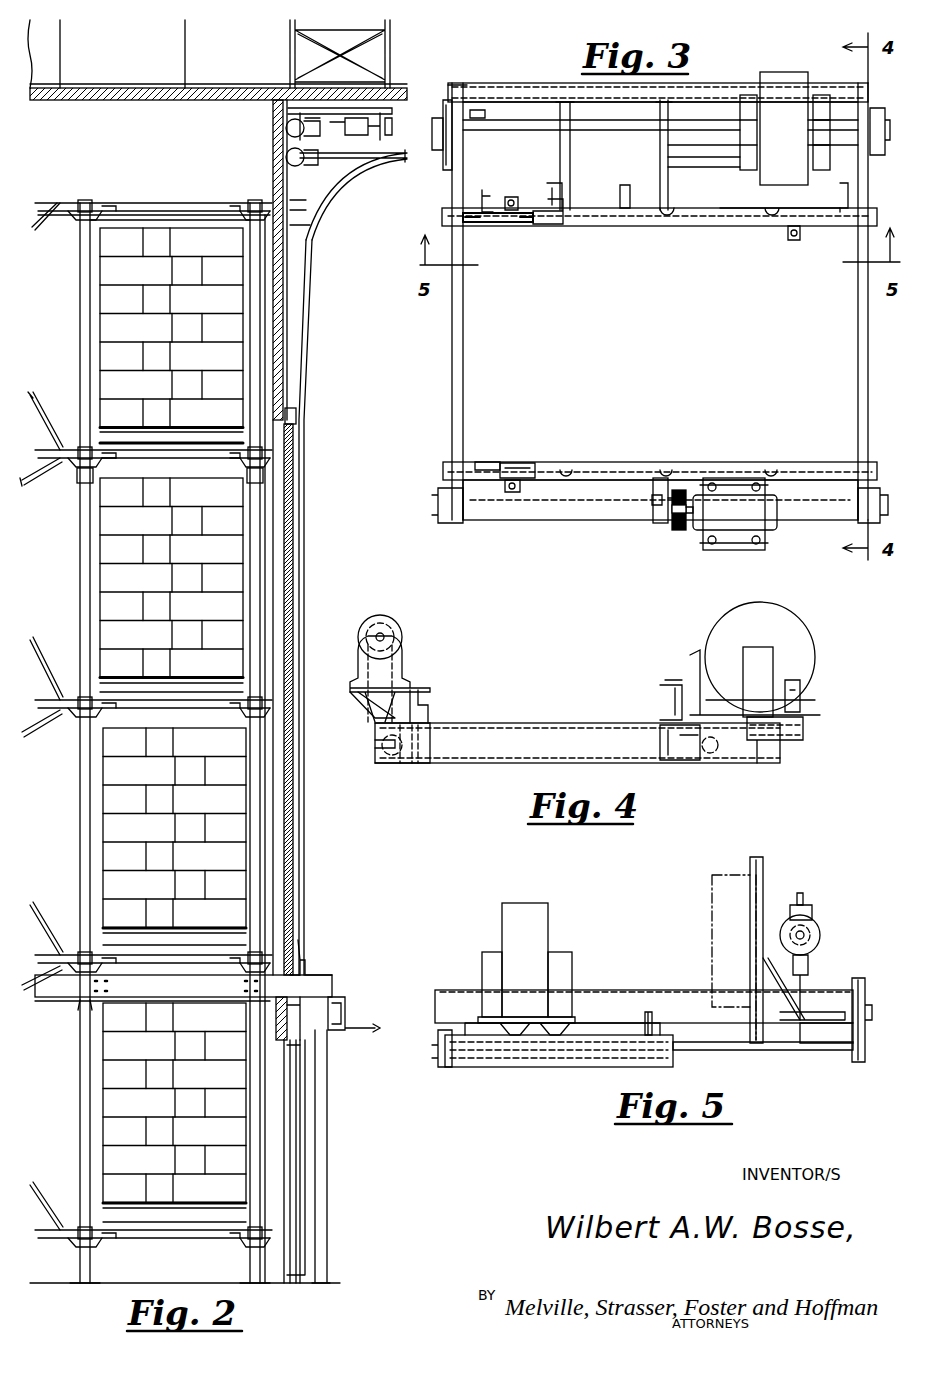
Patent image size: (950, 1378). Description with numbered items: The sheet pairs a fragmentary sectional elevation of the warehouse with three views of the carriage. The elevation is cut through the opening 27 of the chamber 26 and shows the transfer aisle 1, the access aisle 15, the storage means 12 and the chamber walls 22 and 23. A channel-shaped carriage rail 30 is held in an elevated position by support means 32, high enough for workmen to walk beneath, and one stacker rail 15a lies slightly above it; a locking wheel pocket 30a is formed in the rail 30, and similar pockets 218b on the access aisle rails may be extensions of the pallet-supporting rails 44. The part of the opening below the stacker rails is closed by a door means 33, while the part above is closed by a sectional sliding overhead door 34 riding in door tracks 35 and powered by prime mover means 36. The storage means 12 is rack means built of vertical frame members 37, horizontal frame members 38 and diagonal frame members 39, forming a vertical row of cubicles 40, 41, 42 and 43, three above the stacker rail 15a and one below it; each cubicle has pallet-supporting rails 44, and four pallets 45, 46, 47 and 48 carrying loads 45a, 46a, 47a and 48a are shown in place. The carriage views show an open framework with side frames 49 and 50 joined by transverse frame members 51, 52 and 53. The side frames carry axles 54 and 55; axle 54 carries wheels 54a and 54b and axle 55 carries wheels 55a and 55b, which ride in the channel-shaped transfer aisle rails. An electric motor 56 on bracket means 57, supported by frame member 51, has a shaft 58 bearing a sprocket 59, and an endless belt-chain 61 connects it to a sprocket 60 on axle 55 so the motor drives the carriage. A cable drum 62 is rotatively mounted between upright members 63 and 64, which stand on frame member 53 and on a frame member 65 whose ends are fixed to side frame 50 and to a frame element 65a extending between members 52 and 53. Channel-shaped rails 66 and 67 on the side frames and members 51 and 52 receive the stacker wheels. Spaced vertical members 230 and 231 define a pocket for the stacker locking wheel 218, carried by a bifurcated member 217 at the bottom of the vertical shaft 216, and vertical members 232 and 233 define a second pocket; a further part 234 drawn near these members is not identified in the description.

In FIG. 2, the transfer aisle 1 is at (340, 1283).
In FIG. 2, the storage means 12 is at (80, 828).
In FIG. 2, the access aisle 15 is at (128, 1283).
In FIG. 2, the stacker rail 15a is at (188, 995).
In FIG. 2, the wall 22 is at (284, 292).
In FIG. 2, the wall 23 is at (172, 152).
In FIG. 2, the chamber 26 is at (68, 1128).
In FIG. 2, the opening 27 is at (306, 1152).
In FIG. 2, the carriage rail 30 is at (345, 1008).
In FIG. 2, the locking wheel pocket 30a is at (327, 976).
In FIG. 2, the support means 32 is at (330, 1090).
In FIG. 2, the door means 33 is at (292, 1112).
In FIG. 2, the overhead door 34 is at (294, 495).
In FIG. 2, the door tracks 35 is at (305, 522).
In FIG. 2, the prime mover means 36 is at (335, 168).
In FIG. 2, the vertical frame members 37 is at (80, 541).
In FIG. 2, the horizontal frame members 38 is at (172, 212).
In FIG. 2, the diagonal frame members 39 is at (42, 408).
In FIG. 2, the storage cubicle 40 is at (92, 356).
In FIG. 2, the storage cubicle 41 is at (92, 603).
In FIG. 2, the storage cubicle 42 is at (93, 792).
In FIG. 2, the storage cubicle 43 is at (93, 1098).
In FIG. 2, the pallet-supporting rails 44 is at (104, 460).
In FIG. 2, the pallet 45 is at (170, 436).
In FIG. 2, the load 45a is at (158, 338).
In FIG. 2, the pallet 46 is at (170, 688).
In FIG. 2, the load 46a is at (156, 589).
In FIG. 2, the pallet 47 is at (172, 938).
In FIG. 2, the load 47a is at (156, 839).
In FIG. 2, the pallet 48 is at (180, 1210).
In FIG. 2, the load 48a is at (224, 1140).
In FIG. 3, the side frame 49 is at (464, 340).
In FIG. 5, the side frame 49 is at (866, 1058).
In FIG. 3, the side frame 50 is at (858, 344).
In FIG. 4, the side frame 50 is at (490, 732).
In FIG. 5, the side frame 50 is at (440, 1066).
In FIG. 4, the transverse frame member 51 is at (420, 765).
In FIG. 4, the transverse frame member 52 is at (680, 763).
In FIG. 3, the transverse frame member 53 is at (498, 90).
In FIG. 4, the transverse frame member 53 is at (805, 734).
In FIG. 5, the transverse frame member 53 is at (572, 1068).
In FIG. 3, the axle 54 is at (575, 128).
In FIG. 5, the axle 54 is at (790, 1052).
In FIG. 3, the wheel 54a is at (443, 148).
In FIG. 3, the wheel 54b is at (876, 140).
In FIG. 3, the axle 55 is at (540, 512).
In FIG. 4, the axle 55 is at (375, 750).
In FIG. 3, the wheel 55a is at (442, 520).
In FIG. 3, the wheel 55b is at (876, 490).
In FIG. 3, the electric motor 56 is at (765, 525).
In FIG. 4, the electric motor 56 is at (402, 660).
In FIG. 4, the bracket means 57 is at (430, 708).
In FIG. 3, the motor shaft 58 is at (672, 520).
In FIG. 4, the motor shaft 58 is at (400, 630).
In FIG. 3, the sprocket 59 is at (678, 528).
In FIG. 4, the sprocket 59 is at (392, 617).
In FIG. 3, the sprocket 60 is at (665, 495).
In FIG. 4, the sprocket 60 is at (385, 763).
In FIG. 3, the endless belt-chain 61 is at (655, 510).
In FIG. 4, the endless belt-chain 61 is at (372, 714).
In FIG. 3, the cable drum 62 is at (778, 75).
In FIG. 4, the cable drum 62 is at (790, 625).
In FIG. 5, the cable drum 62 is at (530, 905).
In FIG. 3, the upright member 63 is at (740, 130).
In FIG. 5, the upright member 63 is at (568, 966).
In FIG. 3, the upright member 64 is at (828, 130).
In FIG. 4, the upright member 64 is at (770, 673).
In FIG. 5, the upright member 64 is at (482, 970).
In FIG. 3, the frame member 65 is at (672, 162).
In FIG. 3, the frame element 65a is at (655, 152).
In FIG. 3, the carriage rail 66 is at (612, 465).
In FIG. 3, the carriage rail 67 is at (625, 226).
In FIG. 4, the carriage rail 67 is at (662, 690).
In FIG. 5, the carriage rail 67 is at (625, 995).
In FIG. 5, the vertical shaft 216 is at (810, 895).
In FIG. 5, the bifurcated member 217 is at (815, 912).
In FIG. 5, the stacker locking wheel 218 is at (822, 938).
In FIG. 2, the pockets 218b is at (78, 1008).
In FIG. 3, the vertical member 230 is at (505, 226).
In FIG. 3, the vertical member 231 is at (548, 226).
In FIG. 3, the vertical member 232 is at (492, 462).
In FIG. 3, the vertical member 233 is at (548, 465).
In FIG. 3, the clamp bolt 234 is at (522, 488).